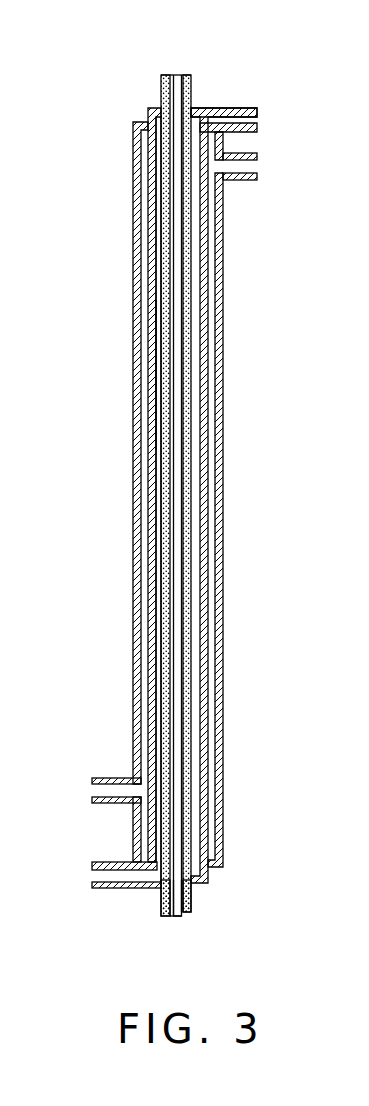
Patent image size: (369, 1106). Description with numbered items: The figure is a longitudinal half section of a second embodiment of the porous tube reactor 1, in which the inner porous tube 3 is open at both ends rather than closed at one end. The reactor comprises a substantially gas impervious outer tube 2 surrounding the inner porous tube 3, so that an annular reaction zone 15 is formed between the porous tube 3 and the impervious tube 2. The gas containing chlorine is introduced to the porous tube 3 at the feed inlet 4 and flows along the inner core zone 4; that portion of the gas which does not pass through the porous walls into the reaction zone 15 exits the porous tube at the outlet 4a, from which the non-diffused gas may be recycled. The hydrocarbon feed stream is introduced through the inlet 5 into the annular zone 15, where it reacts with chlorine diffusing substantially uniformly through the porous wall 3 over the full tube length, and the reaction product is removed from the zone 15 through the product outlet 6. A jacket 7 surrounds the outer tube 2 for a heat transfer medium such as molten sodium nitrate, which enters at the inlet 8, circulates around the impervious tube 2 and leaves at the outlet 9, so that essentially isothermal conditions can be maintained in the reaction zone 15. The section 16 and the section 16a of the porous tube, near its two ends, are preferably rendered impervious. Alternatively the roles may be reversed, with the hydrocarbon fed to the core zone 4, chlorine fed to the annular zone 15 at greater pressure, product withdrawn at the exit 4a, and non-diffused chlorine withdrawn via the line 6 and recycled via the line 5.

The heat exchanger assembly 1 is at (123, 117).
The outer tube 2 is at (150, 205).
The inner porous tube 3 is at (162, 287).
The feed inlet 4 is at (173, 75).
The outlet 4a is at (180, 913).
The inlet 5 is at (258, 115).
The product outlet 6 is at (97, 875).
The jacket 7 is at (135, 447).
The inlet 8 is at (97, 792).
The outlet 9 is at (258, 168).
The annular reaction zone 15 is at (158, 369).
The section of porous tube 16 is at (192, 92).
The section of porous tube 16a is at (193, 902).